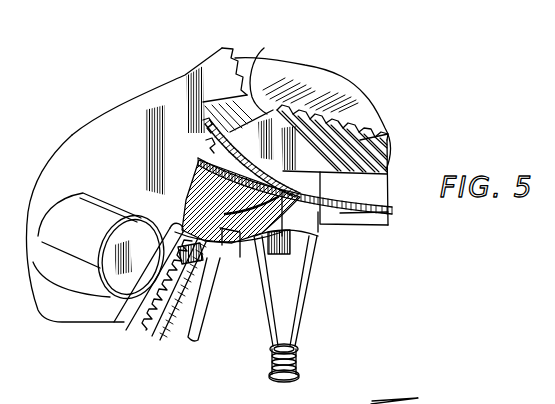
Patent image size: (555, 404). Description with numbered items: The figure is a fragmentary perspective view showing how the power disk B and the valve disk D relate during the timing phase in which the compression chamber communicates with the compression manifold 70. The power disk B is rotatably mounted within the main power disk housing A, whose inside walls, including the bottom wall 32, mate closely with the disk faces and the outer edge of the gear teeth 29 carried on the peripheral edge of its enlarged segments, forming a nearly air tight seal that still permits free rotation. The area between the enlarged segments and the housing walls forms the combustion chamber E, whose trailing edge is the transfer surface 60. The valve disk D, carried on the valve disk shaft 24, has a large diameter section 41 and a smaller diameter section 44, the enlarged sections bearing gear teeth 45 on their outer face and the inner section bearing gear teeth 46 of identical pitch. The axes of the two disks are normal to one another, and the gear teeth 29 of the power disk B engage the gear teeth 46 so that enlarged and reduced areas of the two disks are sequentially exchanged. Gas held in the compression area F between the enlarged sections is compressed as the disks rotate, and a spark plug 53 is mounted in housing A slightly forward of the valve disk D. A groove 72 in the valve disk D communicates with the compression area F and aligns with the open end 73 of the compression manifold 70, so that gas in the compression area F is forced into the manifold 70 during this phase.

The main power disk housing A is at (384, 193).
The power disk B is at (372, 109).
The valve disk D is at (125, 186).
The combustion chamber E is at (384, 147).
The compression area F is at (178, 316).
The valve disk shaft 24 is at (111, 292).
The gear teeth 29 is at (207, 147).
The bottom wall 32 is at (357, 194).
The large diameter section 41 is at (219, 98).
The smaller diameter section 44 is at (185, 183).
The gear teeth 45 is at (235, 58).
The gear teeth 46 is at (157, 336).
The spark plug 53 is at (304, 301).
The transfer surface 60 is at (265, 74).
The compression manifold 70 is at (235, 248).
The groove 72 is at (128, 322).
The open end 73 is at (181, 227).